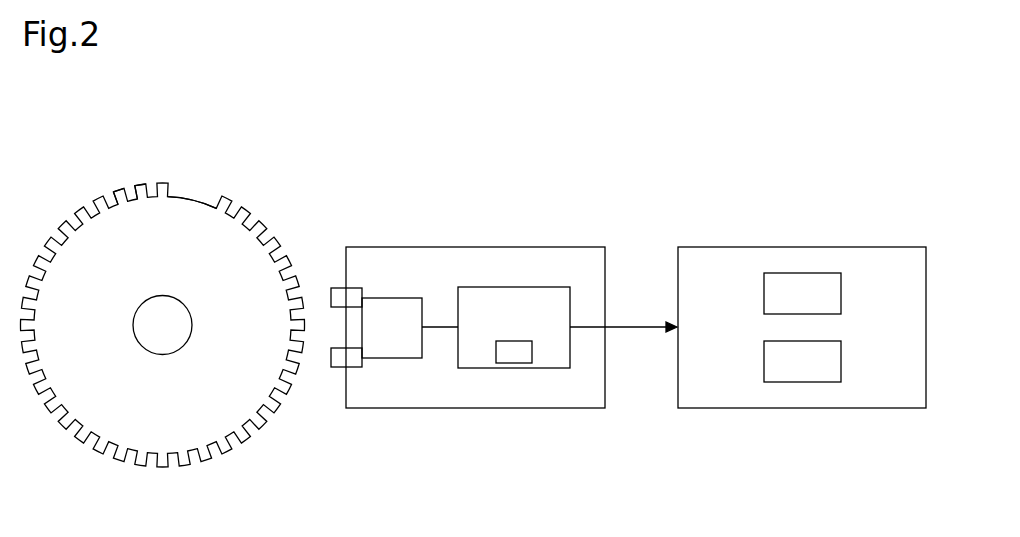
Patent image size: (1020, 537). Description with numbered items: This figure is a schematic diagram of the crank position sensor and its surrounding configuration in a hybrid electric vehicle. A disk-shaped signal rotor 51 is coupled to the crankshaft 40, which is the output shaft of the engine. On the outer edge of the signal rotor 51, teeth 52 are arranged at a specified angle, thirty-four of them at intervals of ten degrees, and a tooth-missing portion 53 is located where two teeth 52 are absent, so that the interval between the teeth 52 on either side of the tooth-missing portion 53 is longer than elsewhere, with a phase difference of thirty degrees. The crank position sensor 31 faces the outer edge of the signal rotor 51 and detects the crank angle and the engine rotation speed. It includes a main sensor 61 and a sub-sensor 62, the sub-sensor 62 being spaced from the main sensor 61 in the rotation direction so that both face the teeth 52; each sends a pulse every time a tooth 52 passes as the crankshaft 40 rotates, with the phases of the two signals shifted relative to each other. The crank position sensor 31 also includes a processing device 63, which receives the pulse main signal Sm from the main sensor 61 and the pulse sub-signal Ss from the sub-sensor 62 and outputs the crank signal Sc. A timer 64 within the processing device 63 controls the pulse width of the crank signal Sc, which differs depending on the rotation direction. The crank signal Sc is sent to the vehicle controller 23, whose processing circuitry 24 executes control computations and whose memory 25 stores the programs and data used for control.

The signal rotor 51 is at (250, 209).
The teeth 52 is at (138, 186).
The tooth-missing portion 53 is at (197, 198).
The crankshaft 40 is at (178, 319).
The crank position sensor 31 is at (448, 258).
The main sensor 61 is at (339, 288).
The sub-sensor 62 is at (337, 369).
The processing device 63 is at (473, 303).
The timer 64 is at (512, 358).
The vehicle controller 23 is at (711, 257).
The processing circuitry 24 is at (800, 272).
The memory 25 is at (800, 383).